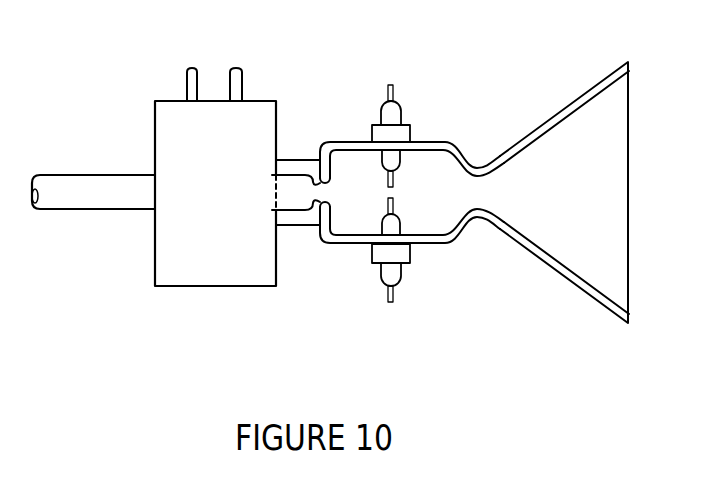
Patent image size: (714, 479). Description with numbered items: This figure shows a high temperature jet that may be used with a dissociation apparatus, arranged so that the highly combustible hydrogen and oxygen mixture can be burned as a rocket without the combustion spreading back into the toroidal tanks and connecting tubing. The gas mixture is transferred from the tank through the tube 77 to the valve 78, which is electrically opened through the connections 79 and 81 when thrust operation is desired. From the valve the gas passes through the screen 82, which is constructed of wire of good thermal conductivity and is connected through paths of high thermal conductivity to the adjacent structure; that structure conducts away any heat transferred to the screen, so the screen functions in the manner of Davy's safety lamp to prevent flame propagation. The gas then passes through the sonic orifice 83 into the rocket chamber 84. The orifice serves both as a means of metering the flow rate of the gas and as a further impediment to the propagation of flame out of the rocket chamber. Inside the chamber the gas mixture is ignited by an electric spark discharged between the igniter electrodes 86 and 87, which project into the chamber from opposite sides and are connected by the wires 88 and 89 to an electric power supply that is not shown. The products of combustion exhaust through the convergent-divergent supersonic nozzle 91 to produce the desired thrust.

The tube 77 is at (112, 209).
The valve 78 is at (155, 243).
The connection 79 is at (187, 69).
The connection 81 is at (243, 66).
The screen 82 is at (277, 197).
The sonic orifice 83 is at (320, 196).
The rocket chamber 84 is at (370, 172).
The igniter electrode 86 is at (397, 162).
The igniter electrode 87 is at (398, 227).
The wire 88 is at (390, 84).
The wire 89 is at (395, 293).
The convergent-divergent supersonic nozzle 91 is at (593, 197).